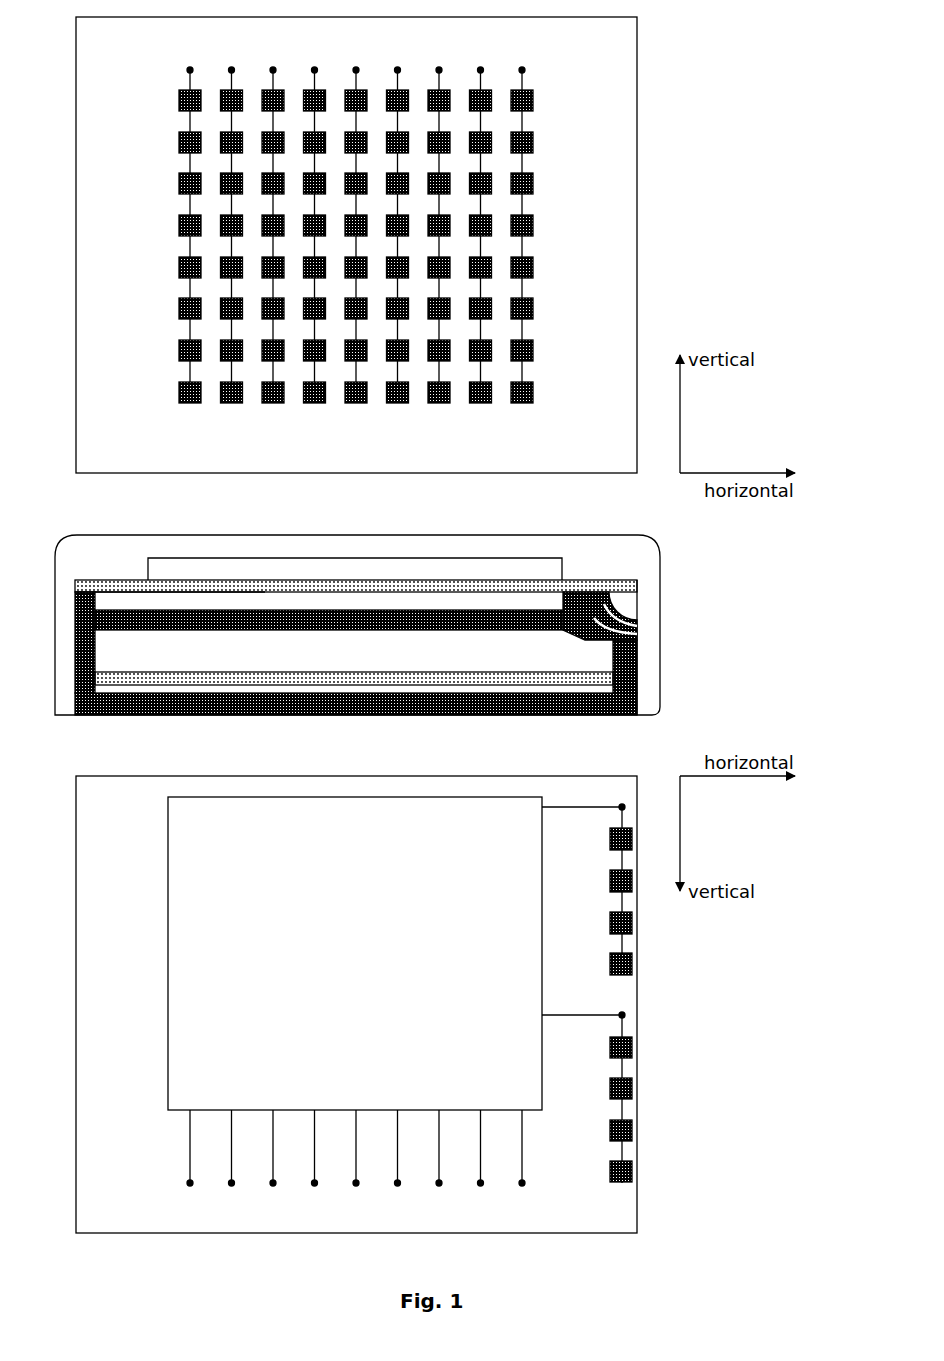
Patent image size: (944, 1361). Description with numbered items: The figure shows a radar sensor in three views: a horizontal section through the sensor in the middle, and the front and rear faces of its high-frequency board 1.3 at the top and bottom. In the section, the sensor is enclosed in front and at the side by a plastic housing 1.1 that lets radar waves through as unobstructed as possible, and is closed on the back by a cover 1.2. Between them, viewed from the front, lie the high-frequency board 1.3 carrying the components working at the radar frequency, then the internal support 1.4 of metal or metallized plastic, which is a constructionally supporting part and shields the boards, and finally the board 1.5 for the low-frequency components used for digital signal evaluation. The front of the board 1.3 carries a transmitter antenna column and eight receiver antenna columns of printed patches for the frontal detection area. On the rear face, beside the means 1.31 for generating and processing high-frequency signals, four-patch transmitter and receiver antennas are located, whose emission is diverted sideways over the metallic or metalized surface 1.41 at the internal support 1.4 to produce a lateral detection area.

The plastic housing 1.1 is at (598, 553).
The cover 1.2 is at (598, 703).
The high-frequency board 1.3 is at (638, 59).
The means for generating and processing high-frequency signals 1.31 is at (210, 1063).
The internal support 1.4 is at (605, 628).
The metallic or metalized surface 1.41 is at (632, 617).
The board for low-frequency components 1.5 is at (595, 677).